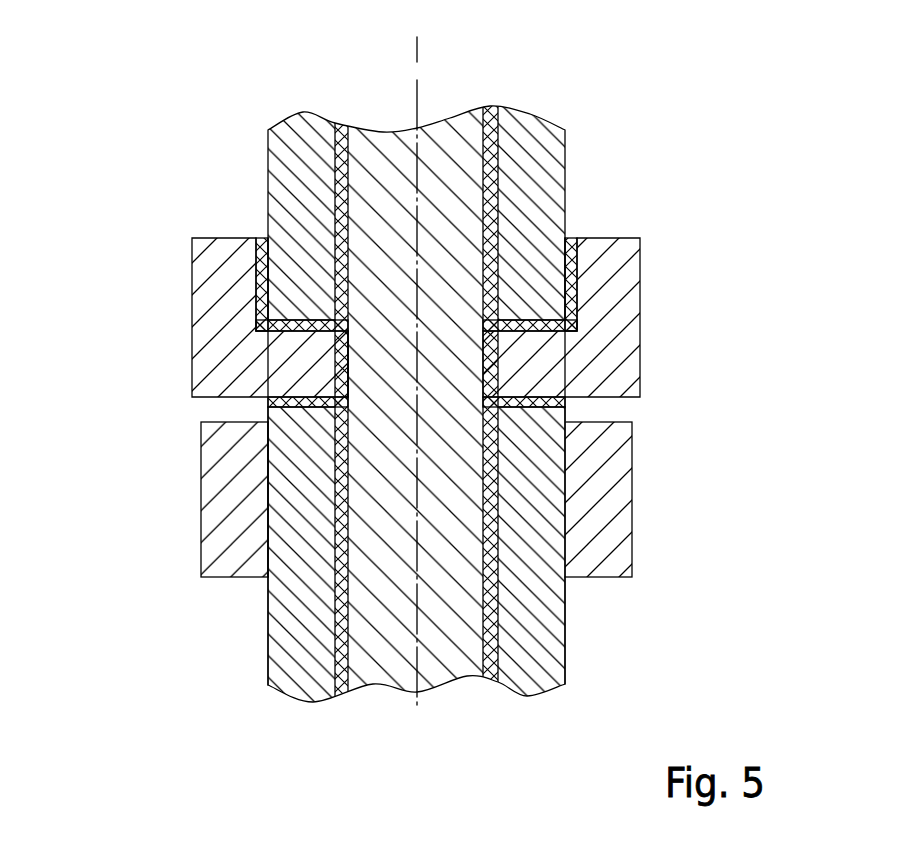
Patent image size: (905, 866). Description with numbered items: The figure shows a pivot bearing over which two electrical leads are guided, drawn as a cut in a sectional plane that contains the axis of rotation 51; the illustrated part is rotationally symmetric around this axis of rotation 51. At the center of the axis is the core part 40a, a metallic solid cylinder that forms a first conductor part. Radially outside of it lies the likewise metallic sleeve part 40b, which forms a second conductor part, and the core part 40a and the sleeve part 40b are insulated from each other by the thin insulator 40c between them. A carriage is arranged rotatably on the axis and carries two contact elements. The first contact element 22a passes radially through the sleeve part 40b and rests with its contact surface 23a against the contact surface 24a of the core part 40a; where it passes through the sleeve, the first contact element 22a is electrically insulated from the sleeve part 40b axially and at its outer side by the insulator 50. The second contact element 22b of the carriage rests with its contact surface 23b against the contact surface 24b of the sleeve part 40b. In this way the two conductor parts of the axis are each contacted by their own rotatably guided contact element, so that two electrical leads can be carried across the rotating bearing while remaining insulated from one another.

The axis of rotation 51 is at (416, 60).
The insulator 50 is at (315, 316).
The contact surface 23a is at (348, 337).
The contact surface 23b is at (286, 542).
The first contact element 22a is at (222, 310).
The second contact element 22b is at (233, 525).
The contact surface 24a is at (347, 357).
The contact surface 24b is at (267, 462).
The core part 40a is at (452, 377).
The sleeve part 40b is at (530, 545).
The insulator 40c is at (490, 643).